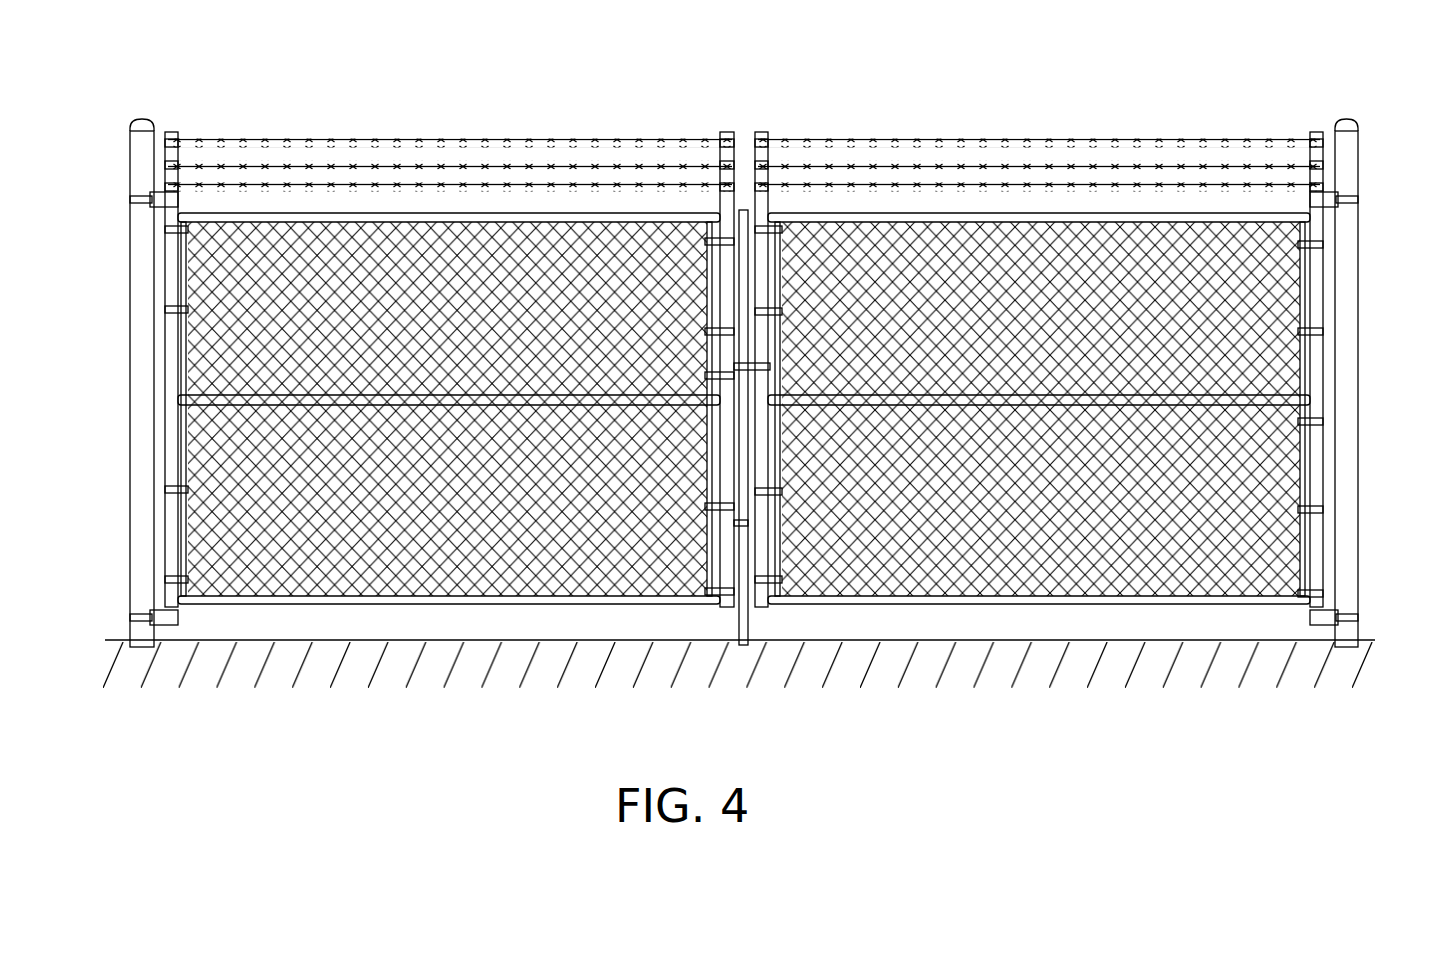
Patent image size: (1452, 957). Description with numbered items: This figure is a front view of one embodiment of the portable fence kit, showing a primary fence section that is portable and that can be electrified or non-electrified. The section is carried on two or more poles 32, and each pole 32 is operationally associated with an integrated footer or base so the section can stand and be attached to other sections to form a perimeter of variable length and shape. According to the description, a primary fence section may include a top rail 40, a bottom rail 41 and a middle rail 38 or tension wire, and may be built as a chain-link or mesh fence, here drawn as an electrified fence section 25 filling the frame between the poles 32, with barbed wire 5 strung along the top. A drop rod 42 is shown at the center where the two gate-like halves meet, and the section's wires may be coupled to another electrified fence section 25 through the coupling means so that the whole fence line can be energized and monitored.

The barbed wire 5 is at (988, 165).
The electrified fence section 25 is at (578, 290).
The pole 32 is at (145, 172).
The middle rail 38 is at (1098, 396).
The top rail 40 is at (503, 213).
The bottom rail 41 is at (545, 605).
The drop rod 42 is at (744, 535).